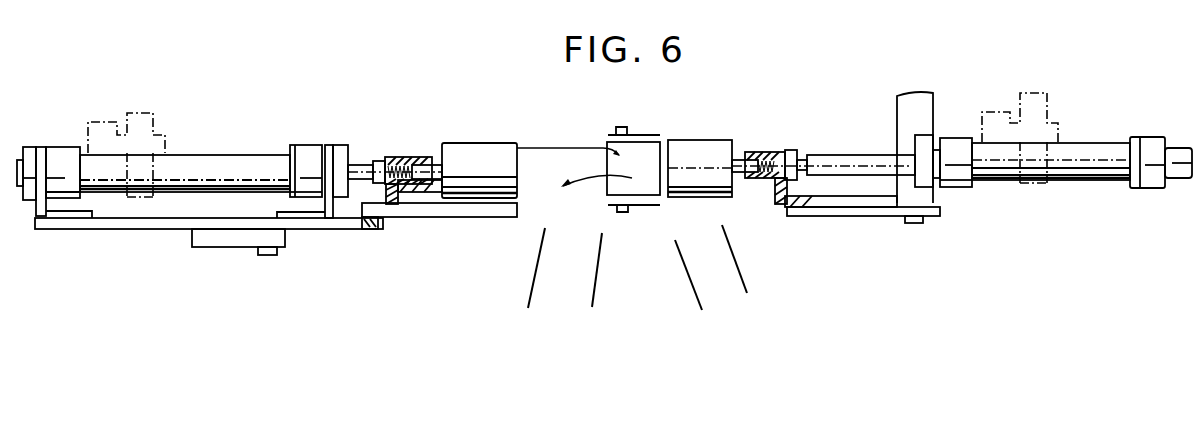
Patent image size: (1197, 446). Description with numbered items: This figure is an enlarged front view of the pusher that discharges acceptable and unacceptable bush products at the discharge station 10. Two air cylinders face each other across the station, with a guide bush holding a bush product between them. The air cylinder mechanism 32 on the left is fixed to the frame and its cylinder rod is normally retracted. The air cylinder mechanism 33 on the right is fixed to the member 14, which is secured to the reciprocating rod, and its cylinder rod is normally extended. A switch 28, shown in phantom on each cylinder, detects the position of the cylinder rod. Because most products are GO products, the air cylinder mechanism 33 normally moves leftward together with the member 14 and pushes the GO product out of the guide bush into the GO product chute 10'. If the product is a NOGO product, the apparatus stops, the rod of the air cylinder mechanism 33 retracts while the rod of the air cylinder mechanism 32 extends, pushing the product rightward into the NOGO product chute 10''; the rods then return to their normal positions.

The discharge station 10 is at (522, 138).
The GO product chute 10' is at (538, 268).
The NOGO product chute 10'' is at (746, 267).
The member 14 is at (920, 107).
The switch 28 is at (97, 122).
The air cylinder mechanism 32 is at (220, 158).
The air cylinder mechanism 33 is at (1095, 150).